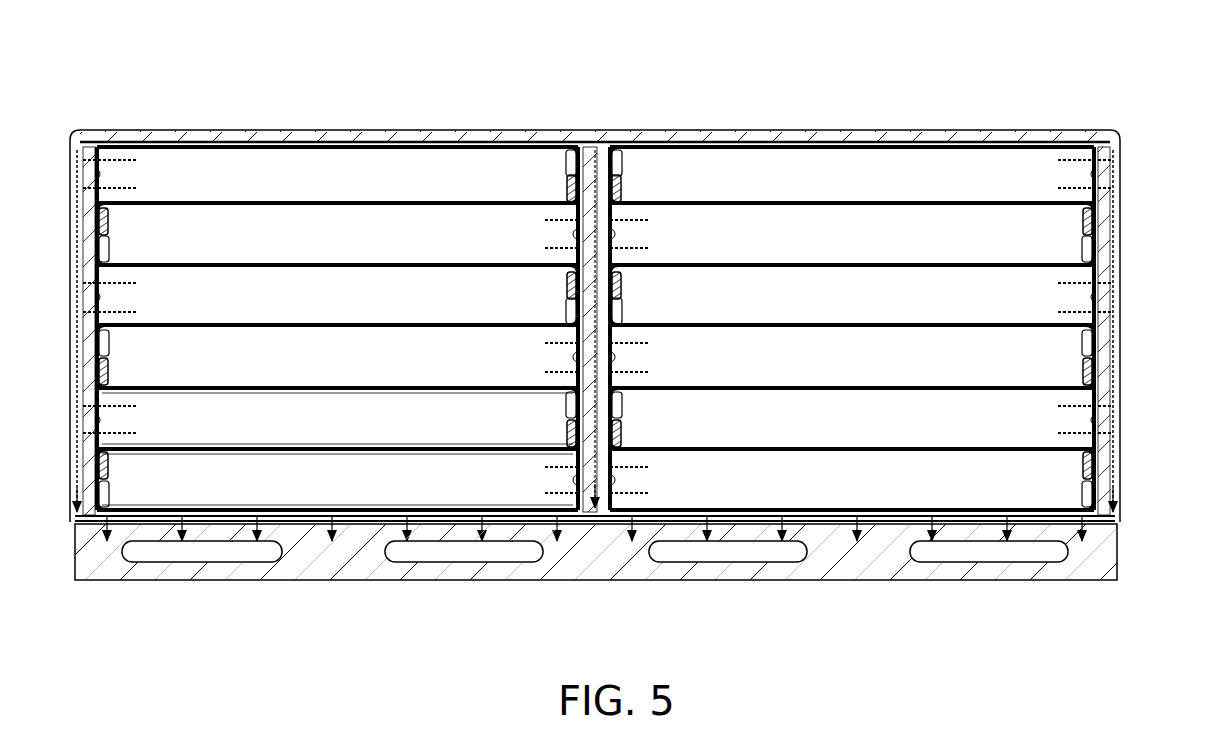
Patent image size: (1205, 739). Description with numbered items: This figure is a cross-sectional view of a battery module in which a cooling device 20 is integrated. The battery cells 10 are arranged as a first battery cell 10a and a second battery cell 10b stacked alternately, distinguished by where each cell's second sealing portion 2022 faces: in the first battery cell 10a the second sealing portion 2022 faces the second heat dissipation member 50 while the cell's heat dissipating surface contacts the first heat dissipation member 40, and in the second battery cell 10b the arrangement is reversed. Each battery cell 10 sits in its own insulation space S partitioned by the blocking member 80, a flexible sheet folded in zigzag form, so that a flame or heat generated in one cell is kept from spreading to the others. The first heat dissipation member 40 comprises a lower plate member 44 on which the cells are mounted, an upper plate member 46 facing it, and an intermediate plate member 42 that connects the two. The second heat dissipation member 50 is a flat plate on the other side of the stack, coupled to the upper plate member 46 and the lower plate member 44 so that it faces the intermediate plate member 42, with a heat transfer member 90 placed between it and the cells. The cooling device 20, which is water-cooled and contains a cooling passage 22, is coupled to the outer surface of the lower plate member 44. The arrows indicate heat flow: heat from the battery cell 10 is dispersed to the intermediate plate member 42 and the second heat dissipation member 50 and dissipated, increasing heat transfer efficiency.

The battery cell 10 is at (365, 636).
The first battery cell 10a is at (270, 482).
The second battery cell 10b is at (392, 425).
The cooling device 20 is at (848, 570).
The cooling passage 22 is at (983, 548).
The second sealing portion 2022 is at (108, 462).
The first heat dissipation member 40 is at (1009, 118).
The intermediate plate member 42 is at (592, 150).
The lower plate member 44 is at (783, 520).
The upper plate member 46 is at (867, 140).
The second heat dissipation member 50 is at (1120, 268).
The blocking member 80 is at (912, 140).
The heat transfer member 90 is at (1117, 318).
The insulation space S is at (80, 250).